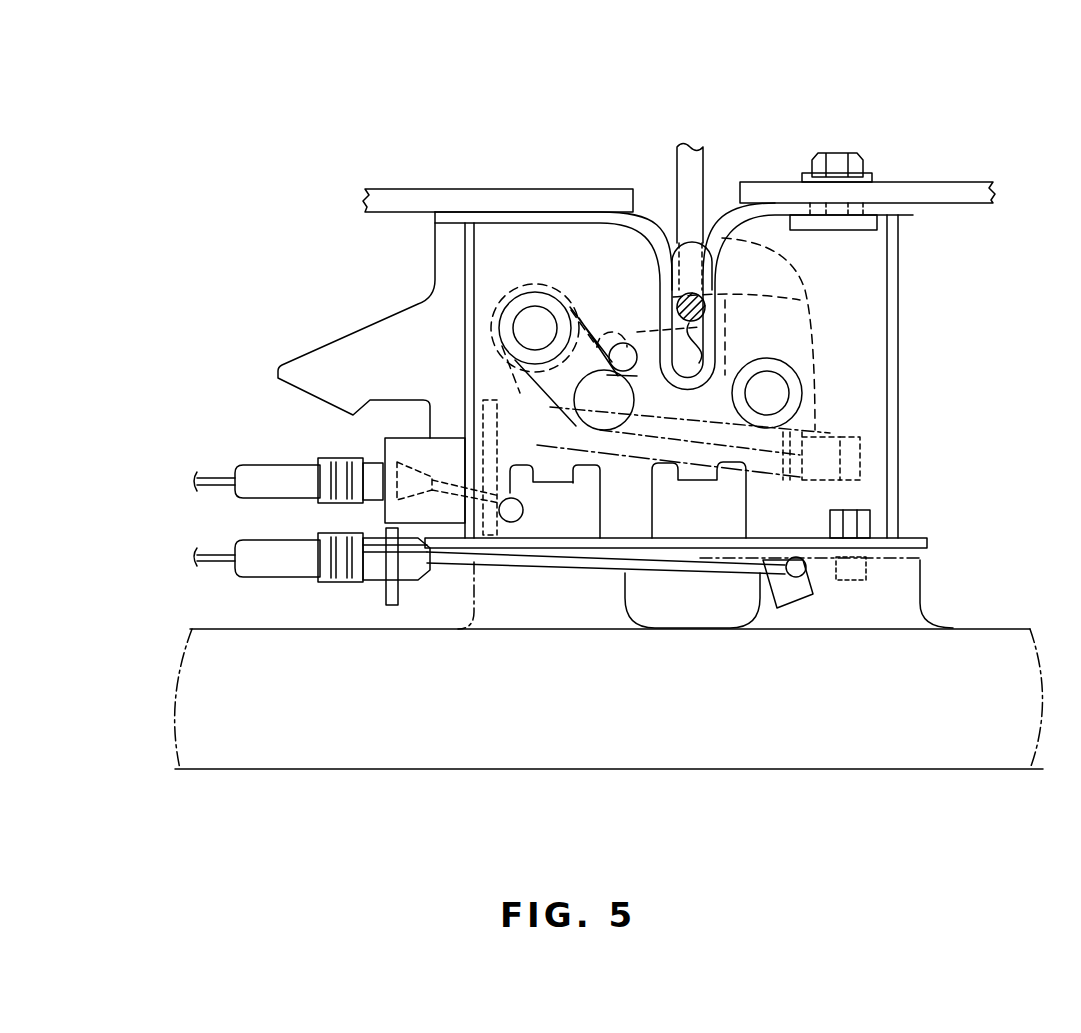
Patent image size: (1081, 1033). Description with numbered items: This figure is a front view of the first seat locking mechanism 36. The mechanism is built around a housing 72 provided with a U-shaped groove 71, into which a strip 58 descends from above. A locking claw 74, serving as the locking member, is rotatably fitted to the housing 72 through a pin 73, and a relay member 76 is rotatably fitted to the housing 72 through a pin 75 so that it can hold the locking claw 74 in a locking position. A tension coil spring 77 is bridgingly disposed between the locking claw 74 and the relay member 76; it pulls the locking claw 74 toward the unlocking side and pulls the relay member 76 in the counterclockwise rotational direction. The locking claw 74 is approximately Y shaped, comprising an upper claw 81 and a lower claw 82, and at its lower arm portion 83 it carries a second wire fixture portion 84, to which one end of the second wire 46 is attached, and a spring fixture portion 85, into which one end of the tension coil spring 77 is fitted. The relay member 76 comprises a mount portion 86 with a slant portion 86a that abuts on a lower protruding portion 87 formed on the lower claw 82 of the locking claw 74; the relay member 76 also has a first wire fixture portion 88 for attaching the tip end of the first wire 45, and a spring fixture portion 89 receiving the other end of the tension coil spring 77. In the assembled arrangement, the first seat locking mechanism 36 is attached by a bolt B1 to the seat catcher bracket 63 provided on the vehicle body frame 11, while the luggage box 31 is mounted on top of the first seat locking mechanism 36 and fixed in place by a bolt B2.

The vehicle body frame 11 is at (927, 771).
The luggage box 31 is at (965, 182).
The first seat locking mechanism 36 is at (330, 278).
The first wire 45 is at (208, 472).
The second wire 46 is at (218, 563).
The hanger strip 58 is at (703, 167).
The seat catcher bracket 63 is at (920, 578).
The U-shaped groove 71 is at (707, 238).
The housing 72 is at (908, 327).
The pin 73 is at (790, 388).
The locking claw 74 is at (797, 277).
The pin 75 is at (518, 296).
The relay member 76 is at (530, 285).
The tension coil spring 77 is at (653, 420).
The upper claw 81 is at (677, 243).
The lower claw 82 is at (630, 338).
The lower arm portion 83 is at (820, 497).
The second wire fixture portion 84 is at (800, 615).
The spring fixture portion 85 is at (865, 462).
The mount portion 86 is at (617, 332).
The slant portion 86a is at (575, 465).
The lower protruding portion 87 is at (600, 438).
The first wire fixture portion 88 is at (492, 536).
The spring fixture portion 89 is at (462, 407).
The bolt B1 is at (870, 512).
The bolt B2 is at (838, 157).